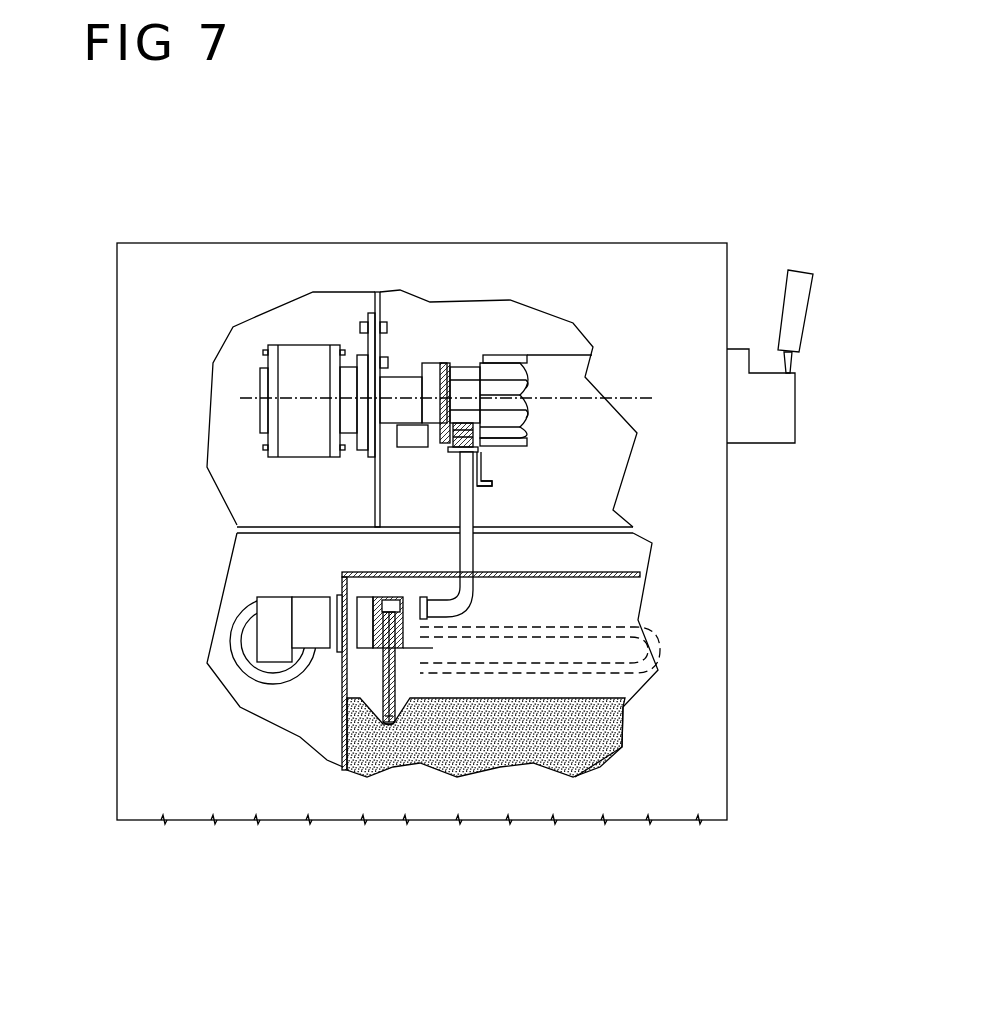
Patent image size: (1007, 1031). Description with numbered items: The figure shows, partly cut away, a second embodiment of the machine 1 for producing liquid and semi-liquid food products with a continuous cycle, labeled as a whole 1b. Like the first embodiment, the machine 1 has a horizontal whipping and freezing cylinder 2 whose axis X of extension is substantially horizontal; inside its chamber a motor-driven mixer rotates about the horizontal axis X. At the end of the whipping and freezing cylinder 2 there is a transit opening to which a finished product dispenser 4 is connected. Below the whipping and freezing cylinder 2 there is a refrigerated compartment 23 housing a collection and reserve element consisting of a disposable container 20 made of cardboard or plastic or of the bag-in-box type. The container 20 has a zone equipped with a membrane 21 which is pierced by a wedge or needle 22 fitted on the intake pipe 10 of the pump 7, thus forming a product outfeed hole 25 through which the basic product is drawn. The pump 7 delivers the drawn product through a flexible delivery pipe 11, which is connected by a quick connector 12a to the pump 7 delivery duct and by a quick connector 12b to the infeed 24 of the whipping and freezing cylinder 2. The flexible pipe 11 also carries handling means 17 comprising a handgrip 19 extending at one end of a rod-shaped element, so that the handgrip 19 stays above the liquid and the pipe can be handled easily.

The machine 1 is at (468, 235).
The machine 1b is at (343, 238).
The axis of extension X is at (252, 395).
The whipping and freezing cylinder 2 is at (560, 338).
The infeed 24 is at (485, 430).
The quick connector 12b is at (440, 448).
The finished product dispenser 4 is at (743, 337).
The handling means 17 is at (480, 465).
The handgrip 19 is at (493, 487).
The flexible pipe 11 is at (477, 525).
The refrigerated compartment 23 is at (337, 683).
The container 20 is at (590, 697).
The membrane 21 is at (394, 692).
The pump 7 is at (383, 592).
The quick connector 12a is at (423, 592).
The intake pipe 10 is at (378, 664).
The wedge or needle 22 is at (398, 708).
The product outfeed hole 25 is at (400, 706).